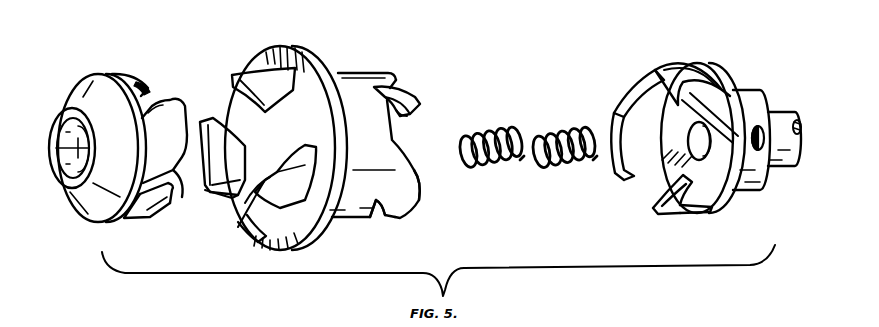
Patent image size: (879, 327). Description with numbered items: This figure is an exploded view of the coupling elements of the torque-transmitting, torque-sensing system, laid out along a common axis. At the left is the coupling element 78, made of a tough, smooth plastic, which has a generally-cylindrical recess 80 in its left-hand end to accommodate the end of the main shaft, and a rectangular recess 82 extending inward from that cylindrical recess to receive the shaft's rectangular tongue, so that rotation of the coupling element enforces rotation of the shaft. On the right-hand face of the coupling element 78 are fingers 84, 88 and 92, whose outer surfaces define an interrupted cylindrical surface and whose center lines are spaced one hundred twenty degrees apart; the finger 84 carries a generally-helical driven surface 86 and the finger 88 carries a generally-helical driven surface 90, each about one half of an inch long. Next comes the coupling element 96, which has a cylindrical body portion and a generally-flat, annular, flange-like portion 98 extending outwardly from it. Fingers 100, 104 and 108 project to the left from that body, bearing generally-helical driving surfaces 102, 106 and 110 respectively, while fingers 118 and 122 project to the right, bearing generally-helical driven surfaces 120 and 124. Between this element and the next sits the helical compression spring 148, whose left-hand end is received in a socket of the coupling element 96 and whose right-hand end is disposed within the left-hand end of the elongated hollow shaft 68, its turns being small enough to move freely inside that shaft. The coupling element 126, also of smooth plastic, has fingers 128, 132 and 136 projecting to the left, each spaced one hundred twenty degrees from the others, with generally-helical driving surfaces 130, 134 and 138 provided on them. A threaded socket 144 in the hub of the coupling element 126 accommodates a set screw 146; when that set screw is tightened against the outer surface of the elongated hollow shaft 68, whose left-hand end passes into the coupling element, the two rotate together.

The elongated hollow shaft 68 is at (780, 166).
The coupling element 78 is at (70, 78).
The generally-cylindrical recess 80 is at (62, 182).
The rectangular recess 82 is at (72, 148).
The finger 84 is at (130, 73).
The generally-helical driven surface 86 is at (148, 90).
The finger 88 is at (180, 105).
The generally-helical driven surface 90 is at (183, 198).
The finger 92 is at (165, 216).
The coupling element 96 is at (362, 68).
The flange-like portion 98 is at (325, 74).
The finger 100 is at (288, 80).
The generally-helical driving surface 102 is at (250, 68).
The finger 104 is at (262, 234).
The generally-helical driving surface 106 is at (272, 165).
The finger 108 is at (222, 126).
The generally-helical driving surface 110 is at (214, 196).
The finger 118 is at (396, 86).
The generally-helical driven surface 120 is at (400, 108).
The finger 122 is at (408, 198).
The generally-helical driven surface 124 is at (379, 214).
The coupling element 126 is at (742, 68).
The finger 128 is at (633, 107).
The generally-helical driving surface 130 is at (630, 178).
The finger 132 is at (676, 76).
The generally-helical driving surface 134 is at (700, 70).
The finger 136 is at (673, 216).
The generally-helical driving surface 138 is at (697, 210).
The threaded socket 144 is at (762, 128).
The set screw 146 is at (800, 130).
The helical compression spring 148 is at (545, 130).